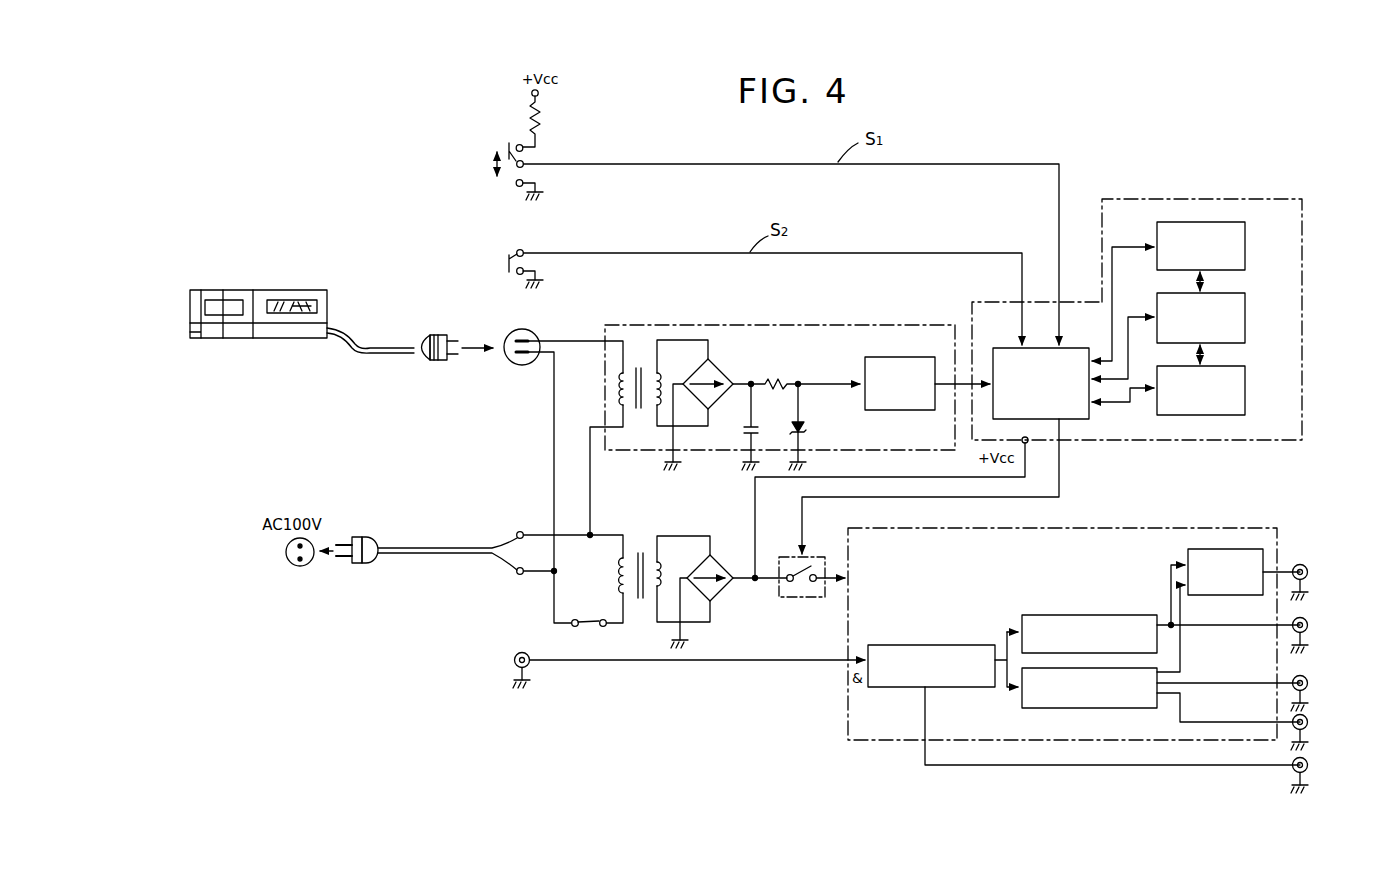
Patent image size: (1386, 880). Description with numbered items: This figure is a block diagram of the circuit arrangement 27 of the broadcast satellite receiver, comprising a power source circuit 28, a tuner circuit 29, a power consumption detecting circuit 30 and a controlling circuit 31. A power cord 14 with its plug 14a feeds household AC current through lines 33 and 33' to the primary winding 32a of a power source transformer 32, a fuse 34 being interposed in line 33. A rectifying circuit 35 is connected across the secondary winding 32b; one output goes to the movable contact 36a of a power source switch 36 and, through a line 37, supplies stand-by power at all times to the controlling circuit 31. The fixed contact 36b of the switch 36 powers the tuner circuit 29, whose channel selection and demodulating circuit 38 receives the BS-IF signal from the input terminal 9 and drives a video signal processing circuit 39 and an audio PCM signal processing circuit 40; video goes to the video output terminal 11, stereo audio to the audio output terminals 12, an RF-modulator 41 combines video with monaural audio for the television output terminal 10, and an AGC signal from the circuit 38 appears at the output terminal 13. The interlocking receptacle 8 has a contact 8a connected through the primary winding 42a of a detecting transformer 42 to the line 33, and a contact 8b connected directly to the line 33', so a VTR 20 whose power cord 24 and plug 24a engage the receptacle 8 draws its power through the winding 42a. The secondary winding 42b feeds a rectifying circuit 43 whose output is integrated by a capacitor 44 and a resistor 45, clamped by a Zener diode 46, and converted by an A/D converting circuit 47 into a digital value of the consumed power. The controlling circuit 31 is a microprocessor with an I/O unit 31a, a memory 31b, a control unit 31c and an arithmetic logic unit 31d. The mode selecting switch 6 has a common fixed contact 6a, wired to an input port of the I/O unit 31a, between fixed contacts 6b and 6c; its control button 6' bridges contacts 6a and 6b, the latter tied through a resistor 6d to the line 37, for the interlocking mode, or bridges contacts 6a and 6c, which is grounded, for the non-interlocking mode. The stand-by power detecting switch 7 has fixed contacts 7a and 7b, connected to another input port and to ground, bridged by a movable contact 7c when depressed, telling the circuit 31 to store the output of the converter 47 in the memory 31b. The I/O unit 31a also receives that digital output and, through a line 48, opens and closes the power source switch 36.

The mode selecting switch 6 is at (467, 120).
The control button 6' is at (476, 150).
The common fixed contact 6a is at (513, 183).
The fixed contact 6b is at (515, 144).
The fixed contact 6c is at (515, 186).
The resistor 6d is at (544, 122).
The stand-by power detecting switch 7 is at (490, 252).
The fixed contact 7a is at (523, 250).
The fixed contact 7b is at (516, 277).
The movable contact 7c is at (508, 271).
The VTR 20 is at (333, 308).
The power cord 24 is at (385, 343).
The plug 24a is at (437, 336).
The interlocking socket or receptacle 8 is at (508, 357).
The contact 8a is at (531, 338).
The contact 8b is at (522, 357).
The power consumption detecting circuit 30 is at (883, 325).
The detecting transformer 42 is at (637, 360).
The primary winding 42a is at (619, 394).
The secondary winding 42b is at (661, 382).
The rectifying circuit 43 is at (720, 370).
The capacitor 44 is at (754, 427).
The resistor 45 is at (782, 382).
The Zener diode 46 is at (806, 428).
The analog-to-digital converting circuit 47 is at (893, 357).
The circuit arrangement 27 is at (1083, 180).
The controlling circuit 31 is at (1307, 256).
The input/output unit 31a is at (1077, 421).
The memory 31b is at (1195, 222).
The control unit 31c is at (1246, 318).
The arithmetic logic unit 31d is at (1246, 395).
The line 48 is at (937, 498).
The power cord 14 is at (447, 547).
The plug 14a is at (365, 538).
The line 33 is at (614, 546).
The line 33' is at (582, 605).
The fuse 34 is at (601, 627).
The power source transformer 32 is at (640, 553).
The primary winding 32a is at (628, 600).
The secondary winding 32b is at (661, 572).
The power source circuit 28 is at (690, 537).
The rectifying circuit 35 is at (722, 562).
The line 37 is at (758, 548).
The power source switch 36 is at (800, 598).
The movable contact 36a is at (787, 582).
The fixed contact 36b is at (815, 584).
The broadcast satellite-IF input terminal 9 is at (515, 654).
The tuner circuit 29 is at (905, 742).
The channel selection and demodulating circuit 38 is at (918, 645).
The video signal processing circuit 39 is at (1076, 614).
The audio PCM signal processing circuit 40 is at (1086, 709).
The RF-modulator 41 is at (1222, 548).
The television output terminal 10 is at (1307, 567).
The video output terminal 11 is at (1308, 624).
The audio output terminals 12 is at (1308, 681).
The output terminal 13 is at (1308, 765).